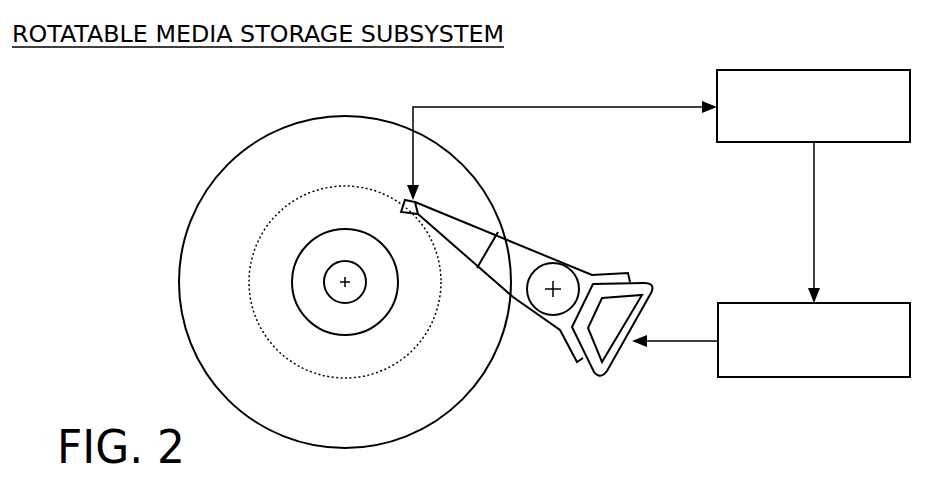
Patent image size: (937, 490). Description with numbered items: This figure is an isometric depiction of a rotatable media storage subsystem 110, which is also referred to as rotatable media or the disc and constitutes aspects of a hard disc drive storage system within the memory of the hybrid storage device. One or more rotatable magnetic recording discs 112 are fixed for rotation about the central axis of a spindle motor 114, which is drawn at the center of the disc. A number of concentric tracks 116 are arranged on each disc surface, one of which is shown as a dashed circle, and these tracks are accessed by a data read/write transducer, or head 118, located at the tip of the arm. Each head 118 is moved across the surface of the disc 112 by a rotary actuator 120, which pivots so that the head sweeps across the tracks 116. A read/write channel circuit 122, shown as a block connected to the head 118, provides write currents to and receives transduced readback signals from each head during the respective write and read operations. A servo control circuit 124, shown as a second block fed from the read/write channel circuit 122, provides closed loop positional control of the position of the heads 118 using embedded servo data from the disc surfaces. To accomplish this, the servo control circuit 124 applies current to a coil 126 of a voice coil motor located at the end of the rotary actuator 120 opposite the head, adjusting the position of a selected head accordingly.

The rotatable media storage subsystem 110 is at (208, 105).
The rotatable magnetic recording disc 112 is at (215, 329).
The spindle motor 114 is at (347, 248).
The concentric tracks 116 is at (350, 375).
The data read/write transducer (head) 118 is at (405, 201).
The rotary actuator 120 is at (596, 238).
The read/write (R/W) channel circuit 122 is at (815, 69).
The servo control circuit 124 is at (853, 302).
The coil 126 is at (645, 280).